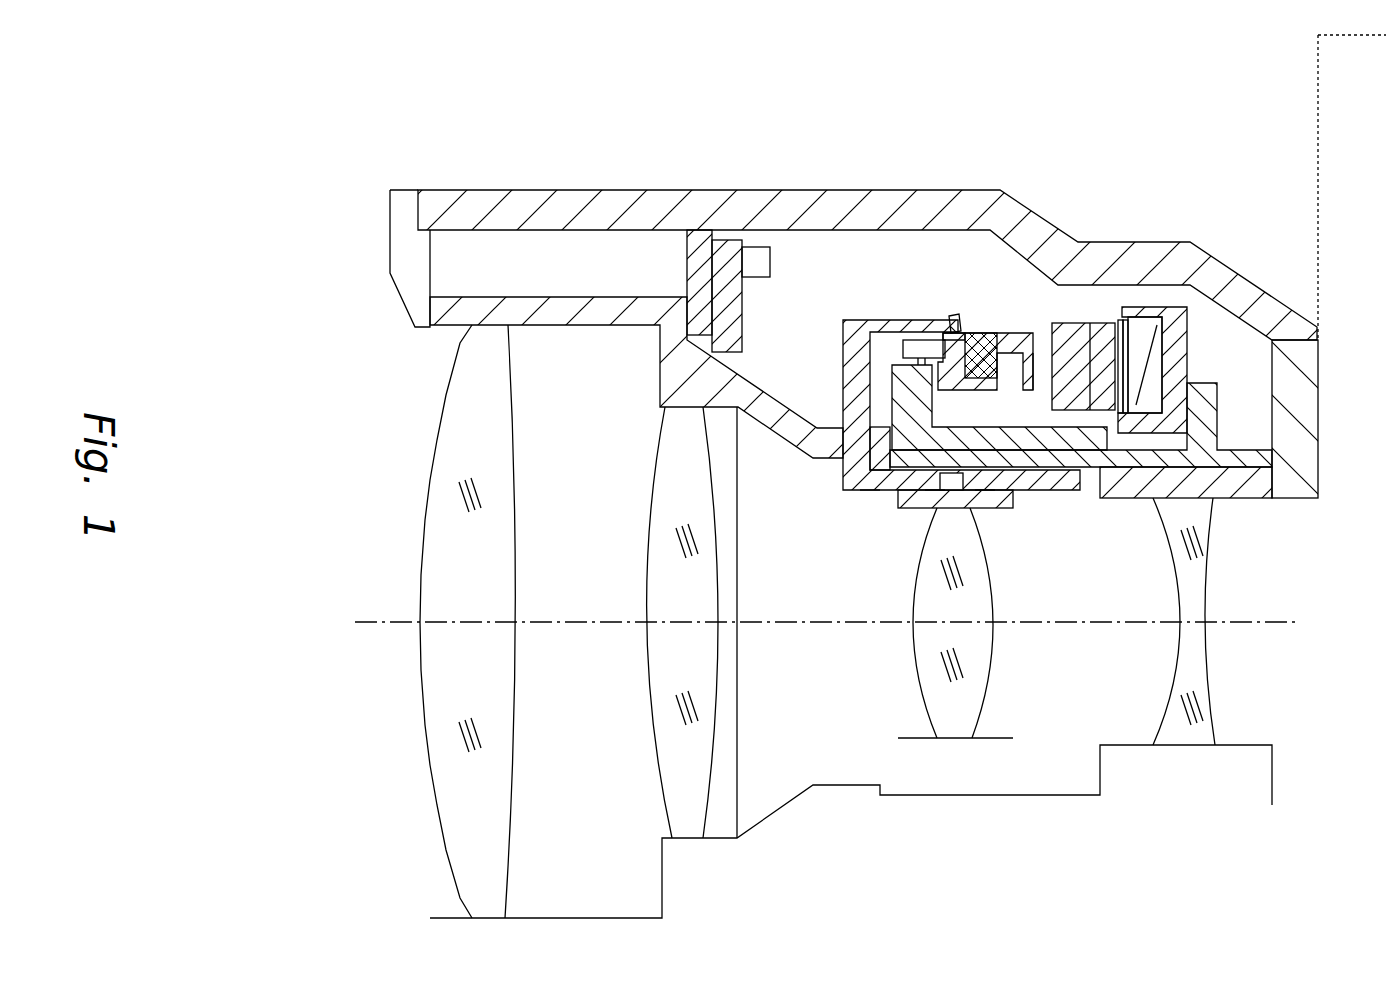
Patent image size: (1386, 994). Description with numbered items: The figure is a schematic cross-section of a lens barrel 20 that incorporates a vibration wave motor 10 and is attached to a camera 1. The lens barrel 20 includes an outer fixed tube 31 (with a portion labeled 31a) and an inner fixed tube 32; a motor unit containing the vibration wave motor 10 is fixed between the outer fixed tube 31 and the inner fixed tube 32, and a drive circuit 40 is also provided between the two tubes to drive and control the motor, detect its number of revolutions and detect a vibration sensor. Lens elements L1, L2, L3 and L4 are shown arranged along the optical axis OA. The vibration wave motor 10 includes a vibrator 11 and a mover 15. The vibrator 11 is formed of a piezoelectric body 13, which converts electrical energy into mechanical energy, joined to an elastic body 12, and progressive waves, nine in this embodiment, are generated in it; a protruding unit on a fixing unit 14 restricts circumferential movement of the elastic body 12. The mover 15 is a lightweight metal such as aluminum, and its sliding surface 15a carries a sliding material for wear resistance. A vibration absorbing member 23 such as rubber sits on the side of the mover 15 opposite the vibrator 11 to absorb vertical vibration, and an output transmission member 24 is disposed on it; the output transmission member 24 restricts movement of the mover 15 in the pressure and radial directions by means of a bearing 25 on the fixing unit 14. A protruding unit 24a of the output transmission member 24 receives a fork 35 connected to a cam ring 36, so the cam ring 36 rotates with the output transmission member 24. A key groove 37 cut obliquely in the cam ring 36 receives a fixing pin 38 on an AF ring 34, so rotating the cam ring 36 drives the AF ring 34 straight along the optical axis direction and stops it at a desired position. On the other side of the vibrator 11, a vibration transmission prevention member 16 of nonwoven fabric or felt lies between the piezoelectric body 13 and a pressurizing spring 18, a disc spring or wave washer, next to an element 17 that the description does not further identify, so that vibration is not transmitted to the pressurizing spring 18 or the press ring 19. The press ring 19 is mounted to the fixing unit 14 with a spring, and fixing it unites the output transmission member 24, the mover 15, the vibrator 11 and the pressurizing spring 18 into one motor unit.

The camera 1 is at (1316, 58).
The vibration wave motor 10 is at (832, 318).
The vibrator 11 is at (1117, 477).
The elastic body 12 is at (1150, 493).
The piezoelectric body 13 is at (1074, 418).
The fixing unit 14 is at (893, 383).
The mover 15 is at (987, 333).
The sliding surface 15a is at (1055, 392).
The vibration transmission prevention member 16 is at (1115, 322).
The pressing spring 17 is at (1128, 320).
The pressurizing spring 18 is at (1162, 320).
The press ring 19 is at (1187, 352).
The lens barrel 20 is at (1138, 138).
The vibration absorbing member 23 is at (980, 333).
The output transmission member 24 is at (935, 335).
The protruding unit 24a is at (955, 315).
The bearing 25 is at (913, 340).
The outer fixed tube 31 is at (578, 190).
The barrel wall portion 31a is at (688, 262).
The inner fixed tube 32 is at (565, 327).
The AF ring 34 is at (985, 494).
The fork 35 is at (855, 320).
The cam ring 36 is at (873, 488).
The key groove 37 is at (935, 488).
The fixing pin 38 is at (1015, 495).
The drive circuit 40 is at (735, 245).
The first lens L1 is at (440, 497).
The second lens L2 is at (665, 565).
The third lens L3 is at (975, 700).
The fourth lens L4 is at (1205, 672).
The optical axis OA is at (809, 623).